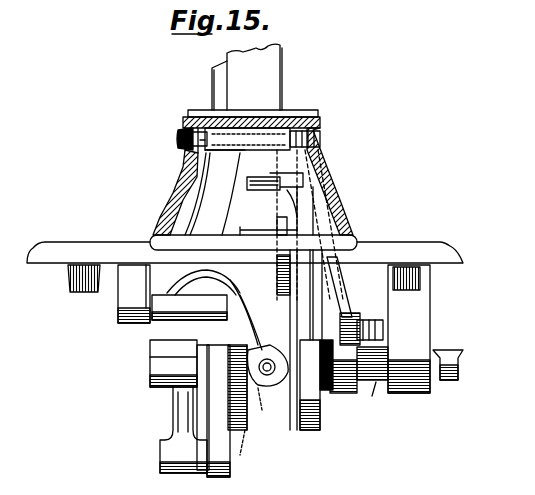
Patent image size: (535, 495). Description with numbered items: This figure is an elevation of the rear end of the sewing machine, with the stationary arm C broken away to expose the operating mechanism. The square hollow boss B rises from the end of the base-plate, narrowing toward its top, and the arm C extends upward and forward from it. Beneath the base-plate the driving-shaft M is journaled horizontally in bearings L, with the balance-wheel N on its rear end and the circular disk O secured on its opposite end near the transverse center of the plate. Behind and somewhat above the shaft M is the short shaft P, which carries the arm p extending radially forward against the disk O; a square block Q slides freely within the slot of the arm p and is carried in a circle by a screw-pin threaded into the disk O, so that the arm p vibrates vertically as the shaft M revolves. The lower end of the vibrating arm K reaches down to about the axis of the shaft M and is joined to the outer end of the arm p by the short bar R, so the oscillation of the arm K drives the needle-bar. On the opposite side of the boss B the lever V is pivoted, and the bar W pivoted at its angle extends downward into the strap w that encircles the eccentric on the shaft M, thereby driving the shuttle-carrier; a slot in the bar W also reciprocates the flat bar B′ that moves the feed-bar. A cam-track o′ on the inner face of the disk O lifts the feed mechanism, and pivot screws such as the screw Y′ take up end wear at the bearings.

The arm C is at (254, 77).
The vibrating arm K is at (216, 92).
The hollow boss B is at (185, 181).
The screw Y′ is at (174, 128).
The lever V is at (260, 142).
The bearings L is at (274, 329).
The short shaft P is at (189, 307).
The short bar R is at (182, 409).
The square block Q is at (198, 407).
The arm p is at (218, 411).
The cam-track o′ is at (263, 413).
The circular plate or disk O is at (242, 447).
The flat bar B′ is at (287, 285).
The strap w is at (310, 394).
The bar W is at (347, 301).
The balance-wheel N is at (335, 295).
The shaft M is at (452, 361).